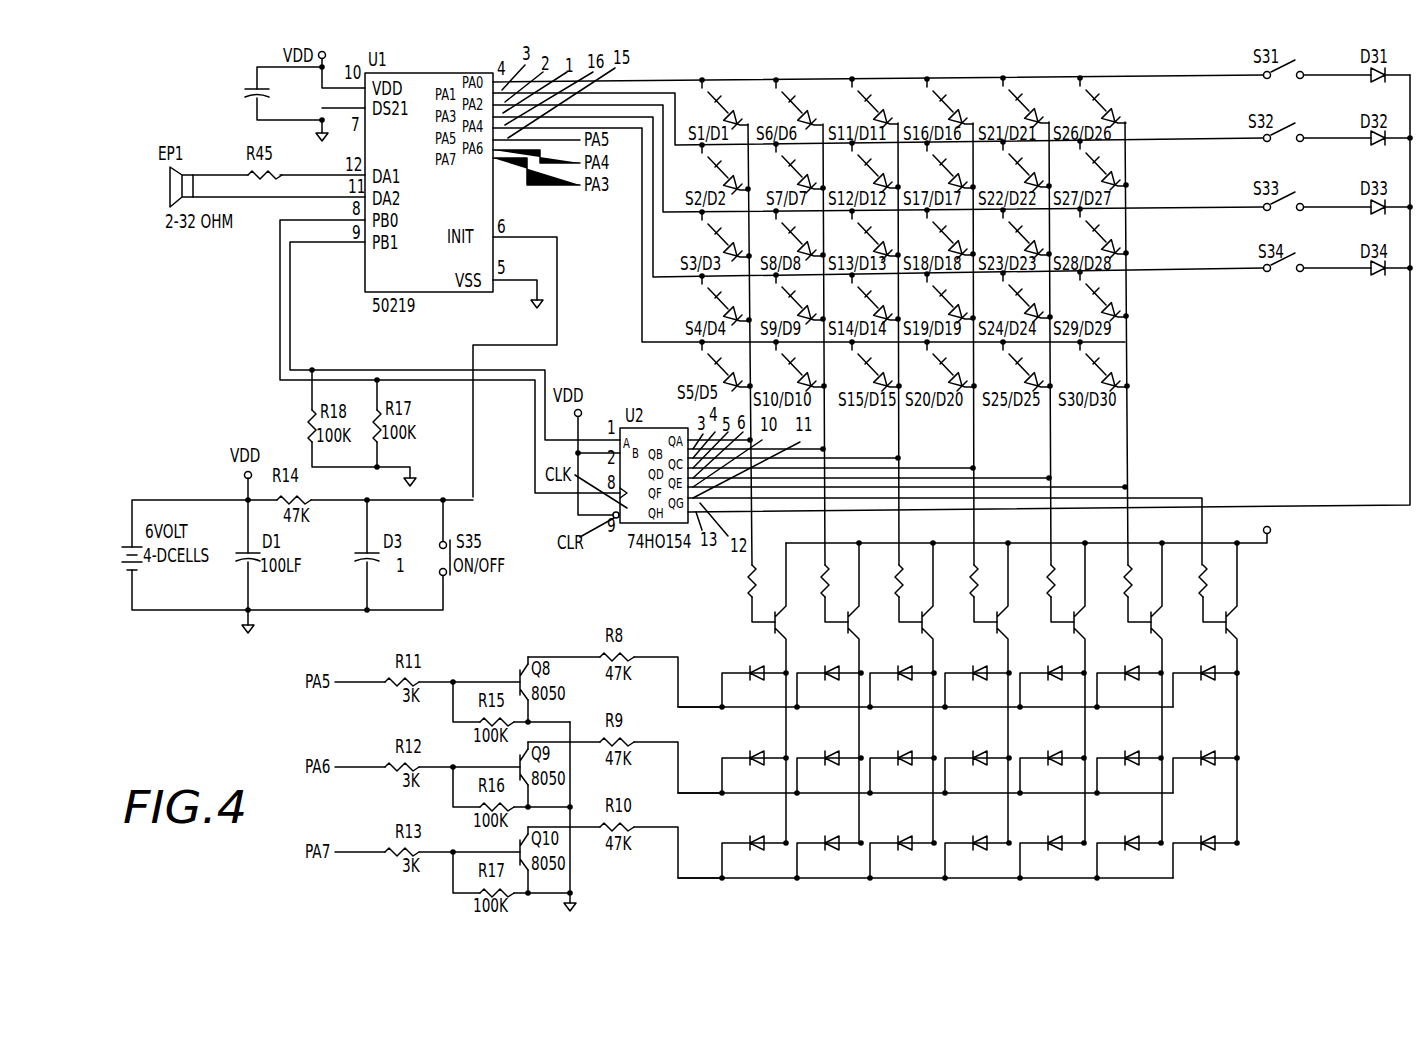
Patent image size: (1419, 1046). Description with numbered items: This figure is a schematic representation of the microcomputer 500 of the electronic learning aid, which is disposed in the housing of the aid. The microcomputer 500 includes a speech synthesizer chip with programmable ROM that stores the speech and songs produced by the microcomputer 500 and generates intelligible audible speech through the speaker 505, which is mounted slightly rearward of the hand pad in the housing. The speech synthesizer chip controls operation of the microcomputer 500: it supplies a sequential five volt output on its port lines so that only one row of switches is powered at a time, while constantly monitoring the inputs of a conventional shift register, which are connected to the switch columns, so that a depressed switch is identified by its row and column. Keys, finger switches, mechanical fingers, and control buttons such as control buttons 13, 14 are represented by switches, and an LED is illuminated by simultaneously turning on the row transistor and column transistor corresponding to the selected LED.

The speaker 505 is at (152, 200).
The microcomputer 500 is at (1028, 700).
The control button 13 is at (503, 160).
The control button 14 is at (530, 152).